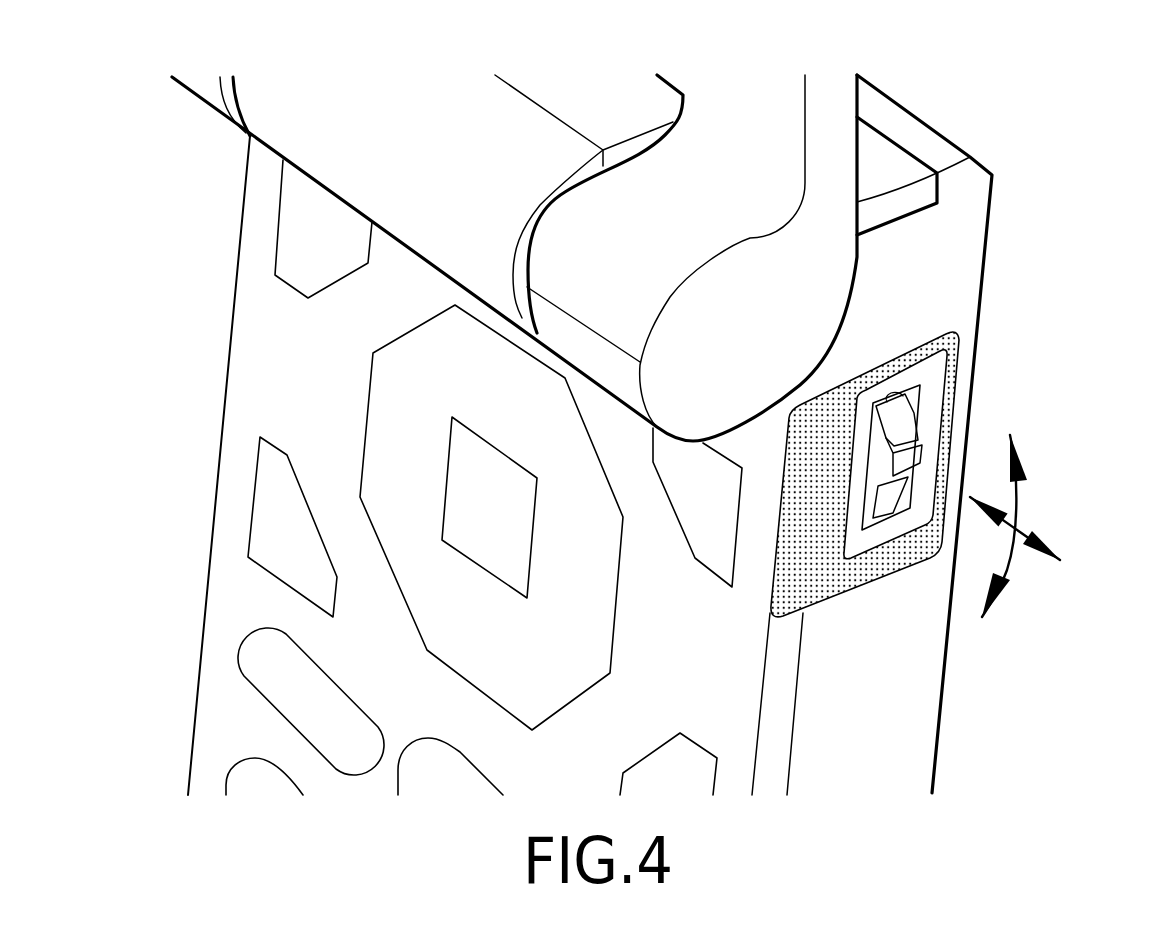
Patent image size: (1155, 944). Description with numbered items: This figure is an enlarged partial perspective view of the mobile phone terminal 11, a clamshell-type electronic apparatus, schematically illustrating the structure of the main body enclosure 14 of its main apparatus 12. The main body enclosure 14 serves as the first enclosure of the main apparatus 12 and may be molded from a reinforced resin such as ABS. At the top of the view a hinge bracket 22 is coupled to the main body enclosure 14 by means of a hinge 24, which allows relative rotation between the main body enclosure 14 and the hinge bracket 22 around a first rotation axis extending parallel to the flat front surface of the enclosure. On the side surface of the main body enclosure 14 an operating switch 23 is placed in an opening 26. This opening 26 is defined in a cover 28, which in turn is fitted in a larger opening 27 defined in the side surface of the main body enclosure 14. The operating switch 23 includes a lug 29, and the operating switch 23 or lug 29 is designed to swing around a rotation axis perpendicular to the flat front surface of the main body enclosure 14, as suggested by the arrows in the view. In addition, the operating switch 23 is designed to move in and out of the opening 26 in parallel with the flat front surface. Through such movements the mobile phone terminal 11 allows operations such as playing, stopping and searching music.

The mobile phone terminal 11 is at (1032, 115).
The main apparatus 12 is at (1006, 231).
The main body enclosure 14 is at (933, 635).
The hinge bracket 22 is at (838, 113).
The operating switch 23 is at (907, 420).
The hinge 24 is at (252, 142).
The opening 26 is at (927, 342).
The opening 27 is at (840, 597).
The cover 28 is at (888, 562).
The lug 29 is at (913, 457).